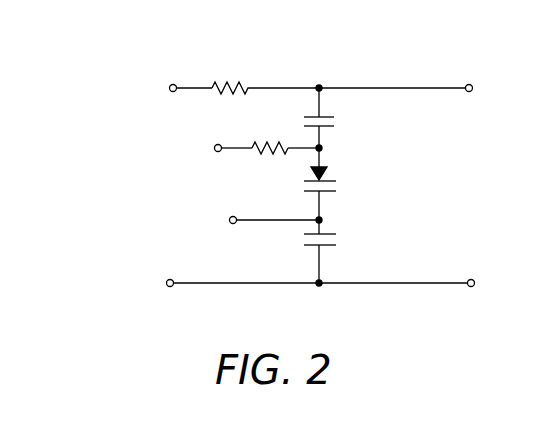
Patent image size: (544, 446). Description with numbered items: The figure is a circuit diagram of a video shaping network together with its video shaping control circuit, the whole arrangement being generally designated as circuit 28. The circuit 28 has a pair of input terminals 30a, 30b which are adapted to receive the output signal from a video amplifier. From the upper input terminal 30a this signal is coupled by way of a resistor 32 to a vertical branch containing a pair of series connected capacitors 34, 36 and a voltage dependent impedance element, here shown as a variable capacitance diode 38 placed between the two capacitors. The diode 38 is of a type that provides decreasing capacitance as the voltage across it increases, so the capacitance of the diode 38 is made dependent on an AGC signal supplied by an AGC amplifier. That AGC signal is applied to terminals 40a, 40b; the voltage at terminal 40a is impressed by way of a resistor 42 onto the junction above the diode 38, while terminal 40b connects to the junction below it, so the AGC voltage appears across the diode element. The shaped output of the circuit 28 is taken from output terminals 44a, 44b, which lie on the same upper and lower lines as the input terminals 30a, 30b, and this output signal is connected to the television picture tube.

The circuit 28 is at (282, 73).
The input terminal 30a is at (170, 85).
The input terminal 30b is at (166, 284).
The resistor 32 is at (233, 82).
The capacitor 34 is at (333, 117).
The capacitor 36 is at (334, 251).
The variable capacitance diode 38 is at (334, 192).
The terminal 40a is at (214, 148).
The terminal 40b is at (229, 220).
The resistor 42 is at (265, 141).
The output terminal 44a is at (469, 84).
The output terminal 44b is at (474, 277).